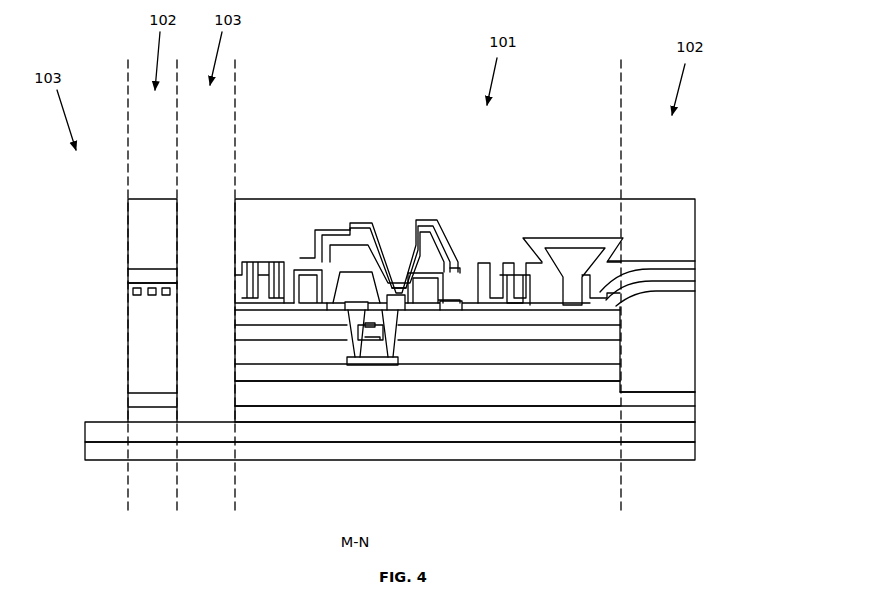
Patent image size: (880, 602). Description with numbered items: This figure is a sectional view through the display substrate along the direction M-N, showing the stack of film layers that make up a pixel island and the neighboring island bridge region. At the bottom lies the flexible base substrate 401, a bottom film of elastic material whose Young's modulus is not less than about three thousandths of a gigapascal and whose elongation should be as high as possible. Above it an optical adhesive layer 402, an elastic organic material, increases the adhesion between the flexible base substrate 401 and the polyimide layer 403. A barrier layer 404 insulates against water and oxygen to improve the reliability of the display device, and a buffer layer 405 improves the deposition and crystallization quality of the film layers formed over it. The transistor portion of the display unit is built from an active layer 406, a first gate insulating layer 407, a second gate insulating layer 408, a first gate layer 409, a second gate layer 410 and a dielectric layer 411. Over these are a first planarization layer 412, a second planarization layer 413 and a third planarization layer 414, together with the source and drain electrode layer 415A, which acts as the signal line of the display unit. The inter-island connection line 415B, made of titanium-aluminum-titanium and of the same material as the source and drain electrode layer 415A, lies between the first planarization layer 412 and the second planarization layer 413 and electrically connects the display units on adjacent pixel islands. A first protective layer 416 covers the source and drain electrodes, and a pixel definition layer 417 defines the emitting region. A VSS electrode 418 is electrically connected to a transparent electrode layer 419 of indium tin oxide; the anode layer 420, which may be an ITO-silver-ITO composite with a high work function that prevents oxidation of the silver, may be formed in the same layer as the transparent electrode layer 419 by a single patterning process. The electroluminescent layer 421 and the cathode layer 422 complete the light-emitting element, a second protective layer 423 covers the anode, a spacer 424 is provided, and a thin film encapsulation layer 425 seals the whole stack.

The flexible base substrate 401 is at (108, 452).
The optical adhesive layer 402 is at (172, 432).
The polyimide layer 403 is at (140, 414).
The barrier layer 404 is at (140, 398).
The buffer layer 405 is at (570, 370).
The active layer 406 is at (355, 362).
The first gate insulating layer 407 is at (420, 357).
The second gate insulating layer 408 is at (465, 340).
The first gate layer 409 is at (375, 357).
The second gate layer 410 is at (362, 326).
The dielectric layer 411 is at (515, 322).
The first planarization layer 412 is at (145, 351).
The second planarization layer 413 is at (133, 275).
The third planarization layer 414 is at (307, 275).
The source and drain electrode layer 415A is at (360, 341).
The inter-island connection line 415B is at (136, 293).
The first protective layer 416 is at (237, 288).
The pixel definition layer 417 is at (334, 252).
The VSS electrode 418 is at (312, 306).
The transparent electrode layer 419 is at (263, 287).
The anode layer 420 is at (392, 250).
The electroluminescent layer 421 is at (365, 235).
The cathode layer 422 is at (350, 237).
The second protective layer 423 is at (345, 225).
The spacer 424 is at (580, 240).
The thin film encapsulation layer 425 is at (145, 233).